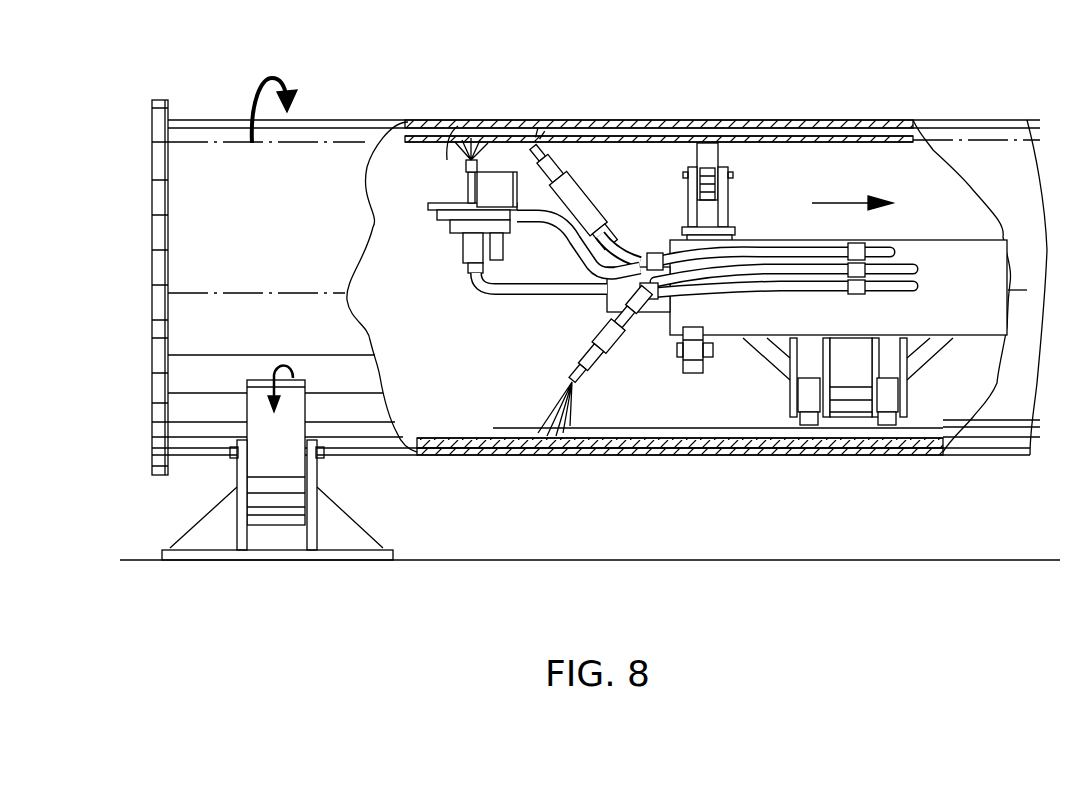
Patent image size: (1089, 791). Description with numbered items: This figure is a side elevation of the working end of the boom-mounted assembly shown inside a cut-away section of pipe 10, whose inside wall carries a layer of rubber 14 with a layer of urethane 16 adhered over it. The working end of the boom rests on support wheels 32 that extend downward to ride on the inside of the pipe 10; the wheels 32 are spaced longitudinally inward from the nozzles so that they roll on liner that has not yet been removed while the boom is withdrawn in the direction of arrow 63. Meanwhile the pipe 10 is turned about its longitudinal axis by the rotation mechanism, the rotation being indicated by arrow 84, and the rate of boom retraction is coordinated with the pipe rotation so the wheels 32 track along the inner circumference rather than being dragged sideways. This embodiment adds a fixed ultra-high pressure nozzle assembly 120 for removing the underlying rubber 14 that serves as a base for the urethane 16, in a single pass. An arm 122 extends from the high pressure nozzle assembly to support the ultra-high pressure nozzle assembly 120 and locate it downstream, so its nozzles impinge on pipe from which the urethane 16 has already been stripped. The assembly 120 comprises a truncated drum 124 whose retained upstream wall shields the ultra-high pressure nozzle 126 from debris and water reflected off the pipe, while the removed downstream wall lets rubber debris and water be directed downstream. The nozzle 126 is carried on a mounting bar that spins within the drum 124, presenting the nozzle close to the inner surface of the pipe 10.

The pipe 10 is at (987, 138).
The layer of rubber 14 is at (560, 130).
The layer of urethane 16 is at (657, 140).
The support wheels 32 is at (890, 413).
The arrow 63 is at (836, 205).
The arrow 84 is at (268, 80).
The ultra-high pressure nozzle assembly 120 is at (434, 178).
The arm 122 is at (538, 223).
The truncated drum 124 is at (503, 180).
The ultra-high pressure water nozzle 126 is at (467, 157).